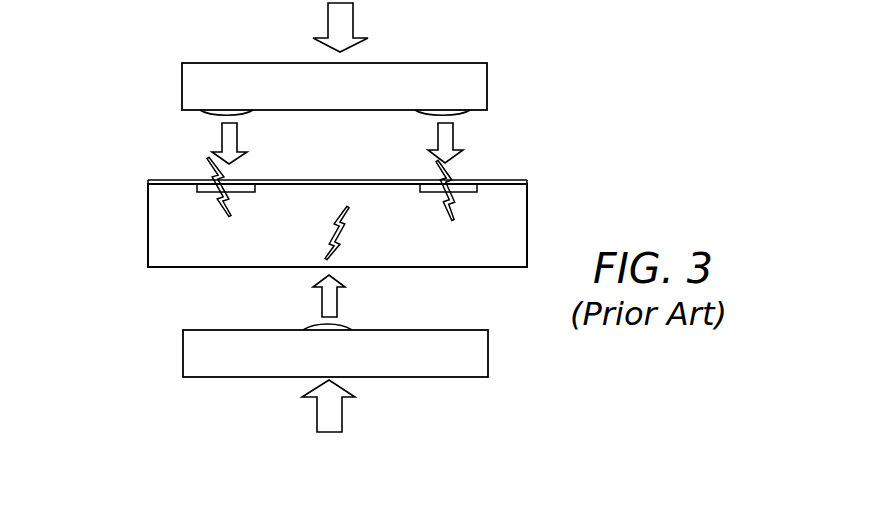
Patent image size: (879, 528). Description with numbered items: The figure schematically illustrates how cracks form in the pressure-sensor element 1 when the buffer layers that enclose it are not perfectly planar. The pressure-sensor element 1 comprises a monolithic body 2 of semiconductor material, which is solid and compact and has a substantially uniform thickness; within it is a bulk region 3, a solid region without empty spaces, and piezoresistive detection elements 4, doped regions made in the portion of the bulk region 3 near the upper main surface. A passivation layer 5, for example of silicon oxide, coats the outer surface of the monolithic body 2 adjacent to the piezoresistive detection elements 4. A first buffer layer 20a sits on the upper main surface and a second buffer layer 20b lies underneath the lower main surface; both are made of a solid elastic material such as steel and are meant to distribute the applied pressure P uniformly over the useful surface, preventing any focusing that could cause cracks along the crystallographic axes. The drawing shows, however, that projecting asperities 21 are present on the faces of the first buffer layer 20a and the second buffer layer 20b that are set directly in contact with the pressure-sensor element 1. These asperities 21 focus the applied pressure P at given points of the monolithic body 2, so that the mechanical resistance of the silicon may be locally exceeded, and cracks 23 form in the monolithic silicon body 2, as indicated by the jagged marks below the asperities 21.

The pressure-sensor element 1 is at (608, 161).
The monolithic body 2 is at (158, 225).
The bulk region 3 is at (512, 247).
The piezoresistive detection elements 4 is at (233, 178).
The passivation layer 5 is at (148, 180).
The first buffer layer 20a is at (475, 87).
The second buffer layer 20b is at (468, 367).
The projecting asperities 21 is at (222, 115).
The cracks 23 is at (321, 247).